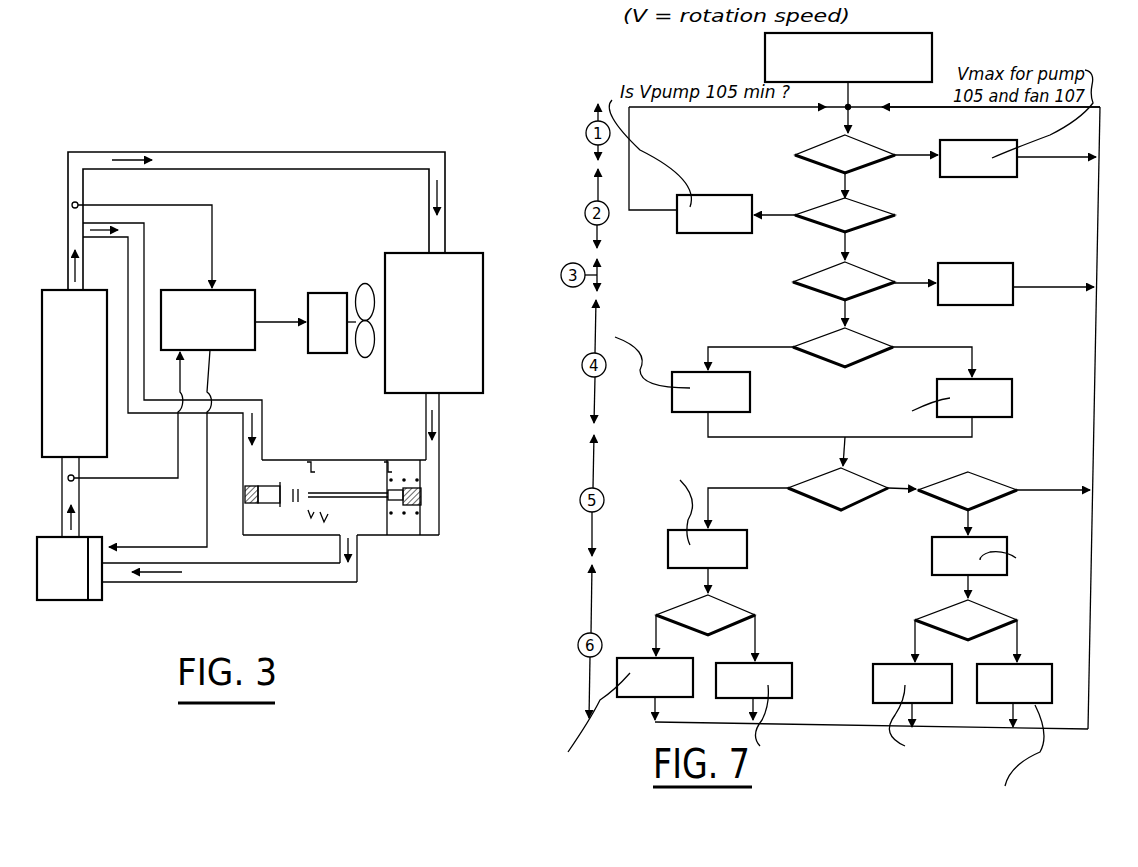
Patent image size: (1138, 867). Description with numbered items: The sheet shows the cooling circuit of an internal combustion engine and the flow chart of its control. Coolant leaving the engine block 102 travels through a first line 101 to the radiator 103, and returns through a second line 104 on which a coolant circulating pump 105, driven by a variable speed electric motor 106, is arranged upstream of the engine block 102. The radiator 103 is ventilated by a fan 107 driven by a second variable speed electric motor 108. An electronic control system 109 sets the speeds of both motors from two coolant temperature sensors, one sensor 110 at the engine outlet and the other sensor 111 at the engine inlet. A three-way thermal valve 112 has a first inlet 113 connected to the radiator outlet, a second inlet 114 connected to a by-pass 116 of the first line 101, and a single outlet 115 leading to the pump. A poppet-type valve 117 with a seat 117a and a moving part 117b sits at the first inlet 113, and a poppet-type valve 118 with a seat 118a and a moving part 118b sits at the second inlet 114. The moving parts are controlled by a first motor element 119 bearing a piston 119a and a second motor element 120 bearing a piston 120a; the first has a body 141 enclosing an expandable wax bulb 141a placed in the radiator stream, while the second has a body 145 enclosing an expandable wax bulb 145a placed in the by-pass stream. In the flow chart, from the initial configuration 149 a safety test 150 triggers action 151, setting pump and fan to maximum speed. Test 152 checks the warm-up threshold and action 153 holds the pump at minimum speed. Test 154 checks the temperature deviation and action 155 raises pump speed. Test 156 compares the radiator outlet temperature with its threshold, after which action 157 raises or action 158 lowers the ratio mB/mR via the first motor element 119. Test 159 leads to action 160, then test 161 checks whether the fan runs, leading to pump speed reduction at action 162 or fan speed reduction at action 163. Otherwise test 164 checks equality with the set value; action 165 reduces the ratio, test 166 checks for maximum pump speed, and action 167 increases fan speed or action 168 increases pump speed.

In FIG. 3, the first line 101 is at (315, 163).
In FIG. 3, the engine block 102 is at (48, 352).
In FIG. 3, the radiator 103 is at (465, 343).
In FIG. 3, the second line 104 is at (240, 540).
In FIG. 3, the coolant circulating pump 105 is at (60, 600).
In FIG. 3, the variable speed electric motor 106 is at (103, 592).
In FIG. 3, the fan 107 is at (366, 292).
In FIG. 3, the second variable speed electric motor 108 is at (322, 300).
In FIG. 3, the electronic control system 109 is at (232, 298).
In FIG. 3, the coolant temperature sensor 110 is at (72, 203).
In FIG. 3, the coolant temperature sensor 111 is at (68, 478).
In FIG. 3, the three-way thermal valve 112 is at (362, 519).
In FIG. 3, the first inlet 113 is at (440, 455).
In FIG. 3, the second inlet 114 is at (255, 453).
In FIG. 3, the outlet 115 is at (358, 542).
In FIG. 3, the by-pass 116 is at (228, 405).
In FIG. 3, the poppet-type valve 117 is at (388, 468).
In FIG. 3, the seat 117a is at (403, 537).
In FIG. 3, the moving part 117b is at (397, 523).
In FIG. 3, the poppet-type valve 118 is at (311, 518).
In FIG. 3, the seat 118a is at (325, 522).
In FIG. 3, the moving part 118b is at (305, 470).
In FIG. 3, the first motor element 119 is at (426, 492).
In FIG. 3, the piston 119a is at (350, 493).
In FIG. 3, the second motor element 120 is at (263, 514).
In FIG. 3, the piston 120a is at (312, 574).
In FIG. 3, the body 141 is at (395, 480).
In FIG. 3, the expandable wax bulb 141a is at (430, 493).
In FIG. 3, the body 145 is at (256, 506).
In FIG. 3, the expandable wax bulb 145a is at (245, 500).
In FIG. 7, the initial configuration 149 is at (935, 62).
In FIG. 7, the test 150 is at (820, 146).
In FIG. 7, the action 151 is at (1005, 165).
In FIG. 7, the test 152 is at (818, 205).
In FIG. 7, the action 153 is at (720, 235).
In FIG. 7, the test 154 is at (818, 275).
In FIG. 7, the action 155 is at (1012, 298).
In FIG. 7, the test 156 is at (820, 336).
In FIG. 7, the action 157 is at (752, 396).
In FIG. 7, the action 158 is at (1014, 402).
In FIG. 7, the test 159 is at (822, 497).
In FIG. 7, the action 160 is at (680, 545).
In FIG. 7, the test 161 is at (682, 613).
In FIG. 7, the action 162 is at (778, 664).
In FIG. 7, the action 163 is at (627, 700).
In FIG. 7, the test 164 is at (990, 486).
In FIG. 7, the action 165 is at (945, 553).
In FIG. 7, the test 166 is at (940, 621).
In FIG. 7, the action 167 is at (890, 665).
In FIG. 7, the action 168 is at (1040, 662).